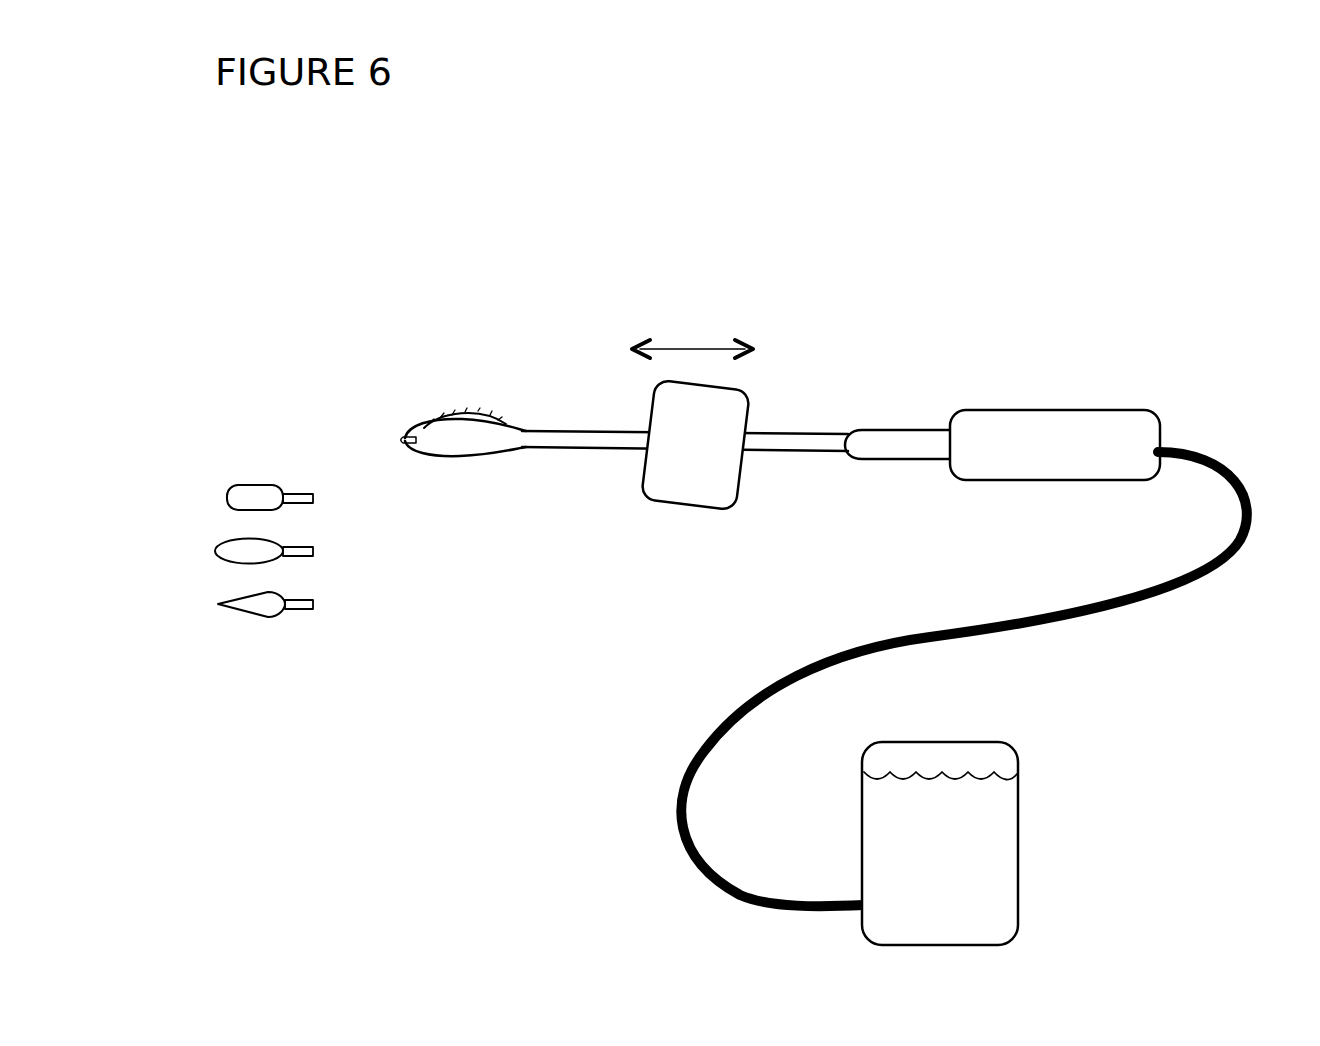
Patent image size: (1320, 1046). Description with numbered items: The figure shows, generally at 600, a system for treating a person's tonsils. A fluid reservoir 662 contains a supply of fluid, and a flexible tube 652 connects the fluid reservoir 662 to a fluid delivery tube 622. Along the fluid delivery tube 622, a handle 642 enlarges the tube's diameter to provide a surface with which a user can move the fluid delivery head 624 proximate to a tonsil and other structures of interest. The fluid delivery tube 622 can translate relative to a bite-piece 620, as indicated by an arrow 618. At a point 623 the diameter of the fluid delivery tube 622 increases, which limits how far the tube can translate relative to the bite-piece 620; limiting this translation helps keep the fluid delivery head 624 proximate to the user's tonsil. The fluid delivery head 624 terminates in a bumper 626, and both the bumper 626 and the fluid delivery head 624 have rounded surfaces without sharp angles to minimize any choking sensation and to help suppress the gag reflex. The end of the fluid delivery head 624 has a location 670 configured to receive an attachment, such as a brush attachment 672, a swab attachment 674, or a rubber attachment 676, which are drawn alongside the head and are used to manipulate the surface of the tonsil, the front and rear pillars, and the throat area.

The system for treating a tonsil 600 is at (1160, 198).
The arrow 618 is at (690, 350).
The bite-piece 620 is at (680, 478).
The fluid delivery tube 622 is at (775, 437).
The point 623 is at (858, 448).
The fluid delivery head 624 is at (457, 410).
The bumper 626 is at (408, 434).
The handle 642 is at (1091, 437).
The flexible tube 652 is at (1163, 594).
The fluid reservoir 662 is at (973, 812).
The location 670 is at (404, 440).
The brush attachment 672 is at (225, 497).
The swab attachment 674 is at (215, 550).
The rubber attachment 676 is at (220, 603).